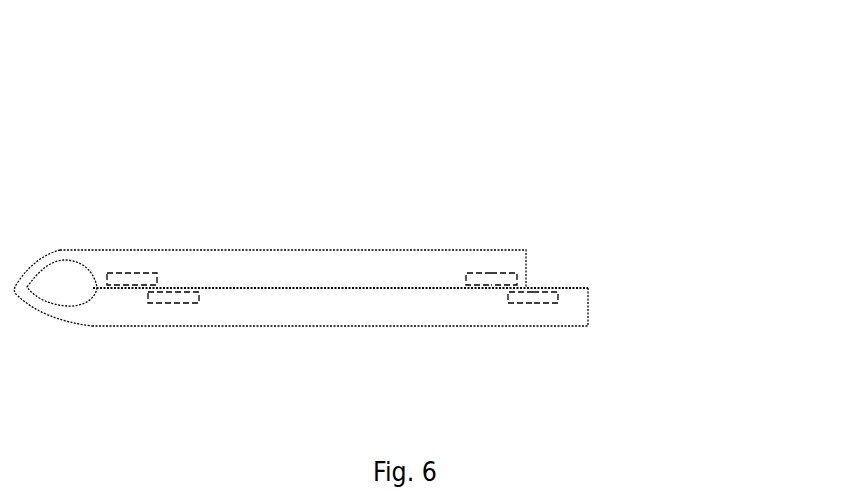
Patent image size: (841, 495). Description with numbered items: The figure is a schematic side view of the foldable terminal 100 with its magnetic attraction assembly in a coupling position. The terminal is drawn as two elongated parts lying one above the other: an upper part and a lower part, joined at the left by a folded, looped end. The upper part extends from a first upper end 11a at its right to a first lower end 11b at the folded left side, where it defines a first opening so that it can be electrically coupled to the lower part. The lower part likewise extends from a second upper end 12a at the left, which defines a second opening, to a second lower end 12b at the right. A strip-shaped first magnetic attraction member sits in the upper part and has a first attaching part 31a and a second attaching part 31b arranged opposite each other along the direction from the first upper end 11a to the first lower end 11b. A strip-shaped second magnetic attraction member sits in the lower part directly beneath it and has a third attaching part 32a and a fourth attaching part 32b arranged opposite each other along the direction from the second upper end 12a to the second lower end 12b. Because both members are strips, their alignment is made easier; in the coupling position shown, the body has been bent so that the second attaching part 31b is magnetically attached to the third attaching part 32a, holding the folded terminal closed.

The electronic device 100 is at (583, 100).
The first upper end 11a is at (526, 267).
The first lower end 11b is at (83, 270).
The second upper end 12a is at (90, 307).
The second lower end 12b is at (588, 310).
The first attaching part 31a is at (468, 273).
The second attaching part 31b is at (512, 273).
The third attaching part 32a is at (513, 303).
The fourth attaching part 32b is at (555, 303).